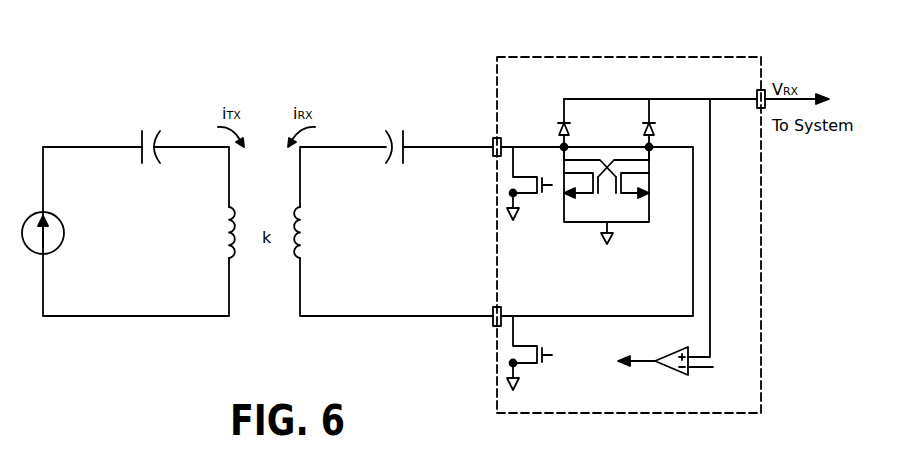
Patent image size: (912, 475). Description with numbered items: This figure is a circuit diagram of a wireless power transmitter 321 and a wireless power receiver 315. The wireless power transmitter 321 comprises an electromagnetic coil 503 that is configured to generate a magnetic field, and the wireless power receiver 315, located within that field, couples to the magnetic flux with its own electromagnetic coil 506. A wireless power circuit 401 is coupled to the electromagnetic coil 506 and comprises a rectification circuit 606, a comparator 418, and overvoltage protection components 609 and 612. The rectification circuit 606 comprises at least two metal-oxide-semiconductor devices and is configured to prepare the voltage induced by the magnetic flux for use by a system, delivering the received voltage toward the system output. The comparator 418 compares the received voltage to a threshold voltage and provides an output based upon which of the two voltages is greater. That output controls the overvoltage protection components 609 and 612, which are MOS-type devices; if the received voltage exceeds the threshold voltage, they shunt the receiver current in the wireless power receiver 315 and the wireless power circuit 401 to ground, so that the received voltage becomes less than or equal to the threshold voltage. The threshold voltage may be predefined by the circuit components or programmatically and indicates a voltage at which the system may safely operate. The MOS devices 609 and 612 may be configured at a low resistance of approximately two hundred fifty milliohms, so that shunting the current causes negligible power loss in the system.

The wireless power transmitter 321 is at (148, 104).
The wireless power receiver 315 is at (389, 104).
The electromagnetic coil 503 is at (232, 207).
The electromagnetic coil 506 is at (298, 259).
The wireless power circuit 401 is at (502, 56).
The overvoltage protection component 609 is at (503, 172).
The overvoltage protection component 612 is at (507, 341).
The rectification circuit 606 is at (574, 232).
The comparator 418 is at (676, 376).